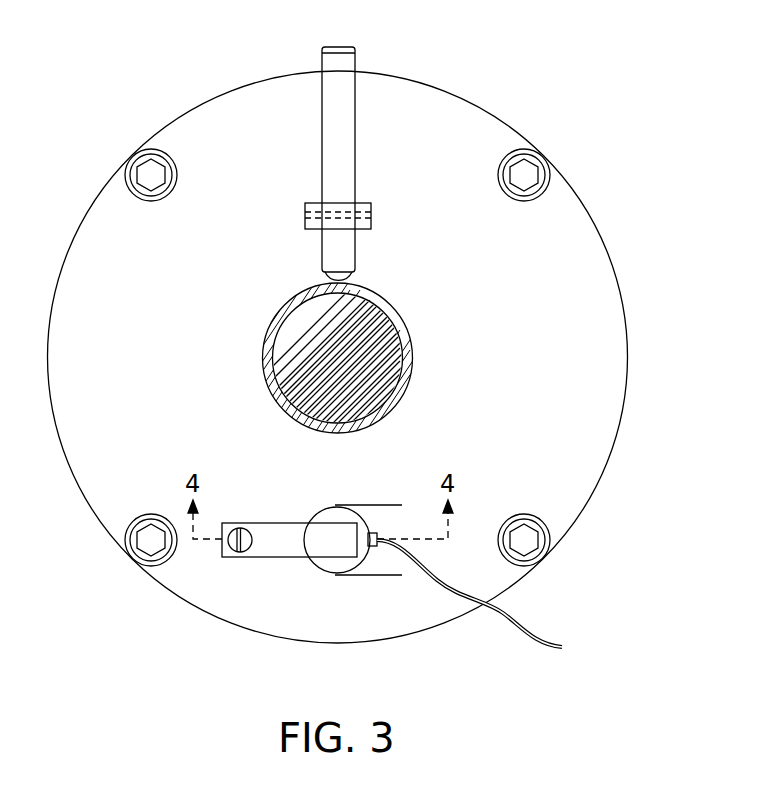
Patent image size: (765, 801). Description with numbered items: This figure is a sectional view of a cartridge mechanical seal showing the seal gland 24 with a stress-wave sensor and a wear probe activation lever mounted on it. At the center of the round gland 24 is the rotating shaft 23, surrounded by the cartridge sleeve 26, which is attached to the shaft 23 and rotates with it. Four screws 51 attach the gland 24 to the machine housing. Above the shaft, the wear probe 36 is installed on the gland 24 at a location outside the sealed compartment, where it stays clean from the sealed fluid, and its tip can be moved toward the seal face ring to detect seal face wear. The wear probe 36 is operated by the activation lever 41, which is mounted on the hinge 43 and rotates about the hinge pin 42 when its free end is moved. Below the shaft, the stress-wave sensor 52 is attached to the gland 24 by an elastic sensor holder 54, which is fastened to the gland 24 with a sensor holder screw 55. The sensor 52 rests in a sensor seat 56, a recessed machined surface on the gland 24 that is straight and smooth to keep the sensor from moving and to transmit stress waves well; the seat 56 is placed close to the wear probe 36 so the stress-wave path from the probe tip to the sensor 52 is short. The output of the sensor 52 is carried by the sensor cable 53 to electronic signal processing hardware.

The seal gland 24 is at (235, 110).
The activation lever 41 is at (350, 61).
The screws 51 is at (157, 173).
The hinge 43 is at (371, 208).
The hinge pin 42 is at (371, 217).
The wear probe 36 is at (343, 278).
The cartridge sleeve 26 is at (402, 328).
The rotating shaft 23 is at (390, 403).
The elastic sensor holder 54 is at (278, 528).
The sensor holder screw 55 is at (233, 551).
The stress-wave sensor 52 is at (323, 560).
The sensor seat 56 is at (382, 558).
The sensor cable 53 is at (538, 650).